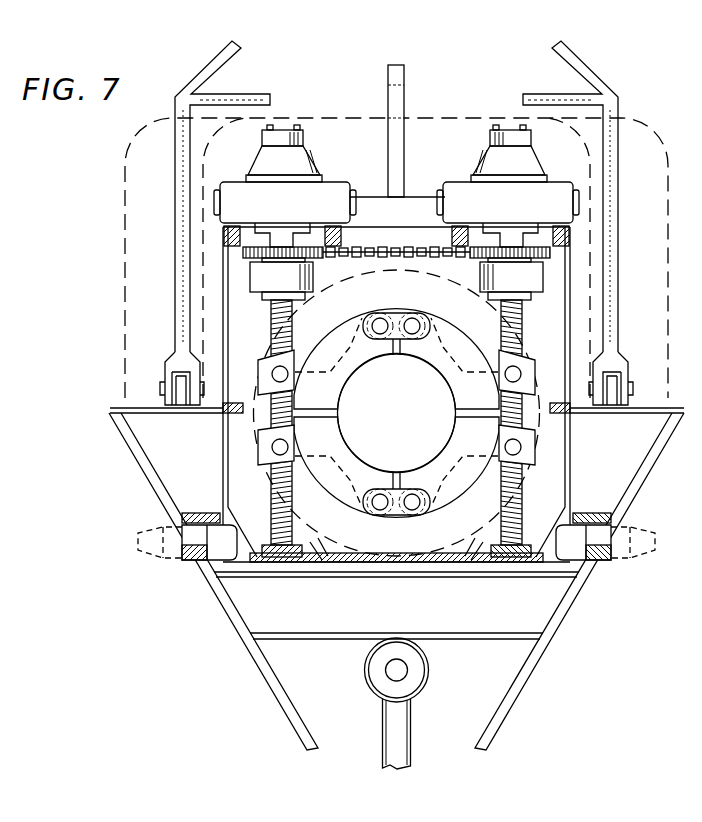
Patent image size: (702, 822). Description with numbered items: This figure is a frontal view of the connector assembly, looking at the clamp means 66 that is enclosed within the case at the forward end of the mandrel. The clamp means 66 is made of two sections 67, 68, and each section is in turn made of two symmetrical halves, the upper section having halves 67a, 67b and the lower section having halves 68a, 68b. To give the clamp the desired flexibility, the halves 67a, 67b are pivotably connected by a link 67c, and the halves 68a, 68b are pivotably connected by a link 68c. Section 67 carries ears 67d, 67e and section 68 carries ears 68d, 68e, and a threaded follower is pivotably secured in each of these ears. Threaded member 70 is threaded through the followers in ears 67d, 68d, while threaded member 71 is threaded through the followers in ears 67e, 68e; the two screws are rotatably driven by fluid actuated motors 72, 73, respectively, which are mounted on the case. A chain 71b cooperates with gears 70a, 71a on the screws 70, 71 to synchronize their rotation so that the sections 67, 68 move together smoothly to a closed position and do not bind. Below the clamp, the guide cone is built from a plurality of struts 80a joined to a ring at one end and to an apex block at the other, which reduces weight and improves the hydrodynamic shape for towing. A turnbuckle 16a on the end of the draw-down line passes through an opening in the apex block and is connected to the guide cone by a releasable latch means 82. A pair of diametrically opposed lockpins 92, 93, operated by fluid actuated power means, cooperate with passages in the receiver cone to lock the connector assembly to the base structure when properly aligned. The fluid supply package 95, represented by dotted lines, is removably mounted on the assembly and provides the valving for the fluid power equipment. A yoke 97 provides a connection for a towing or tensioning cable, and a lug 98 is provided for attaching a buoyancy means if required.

The turnbuckle 16a is at (412, 720).
The clamp means 66 is at (423, 367).
The section 67 is at (437, 309).
The half 67a is at (357, 350).
The half 67b is at (448, 381).
The link 67c is at (388, 313).
The ear 67d is at (289, 375).
The ear 67e is at (503, 373).
The section 68 is at (438, 519).
The half 68a is at (349, 459).
The half 68b is at (443, 461).
The link 68c is at (393, 512).
The ear 68d is at (268, 440).
The ear 68e is at (527, 448).
The threaded member 70 is at (271, 308).
The gear 70a is at (243, 252).
The threaded member 71 is at (522, 308).
The gear 71a is at (552, 252).
The chain 71b is at (384, 244).
The fluid actuated motor 72 is at (310, 158).
The fluid actuated motor 73 is at (483, 158).
The strut 80a is at (247, 653).
The releasable latch means 82 is at (412, 670).
The lockpin 92 is at (190, 553).
The lockpin 93 is at (610, 557).
The fluid supply package 95 is at (420, 118).
The yoke 97 is at (590, 68).
The lug 98 is at (388, 161).